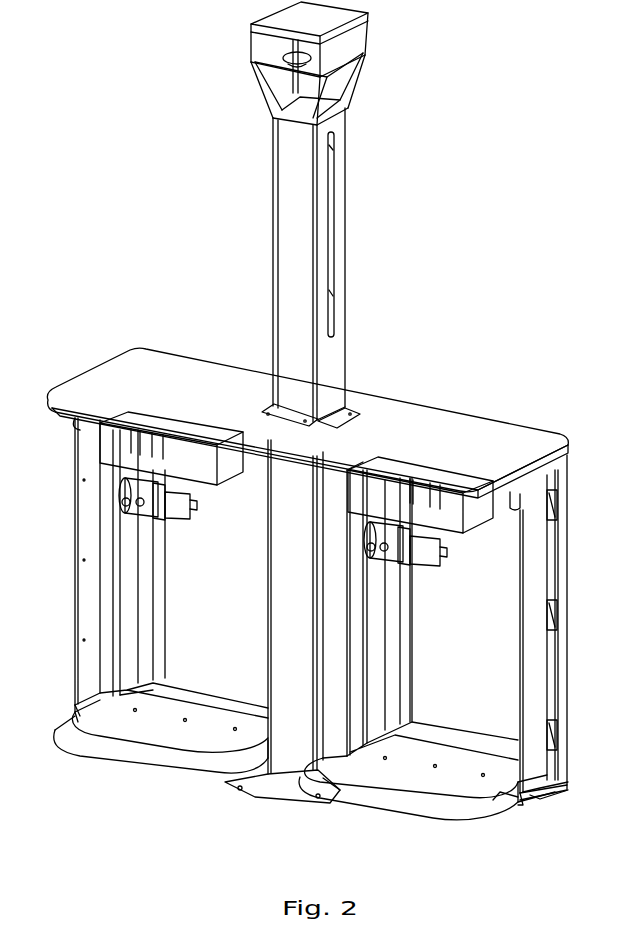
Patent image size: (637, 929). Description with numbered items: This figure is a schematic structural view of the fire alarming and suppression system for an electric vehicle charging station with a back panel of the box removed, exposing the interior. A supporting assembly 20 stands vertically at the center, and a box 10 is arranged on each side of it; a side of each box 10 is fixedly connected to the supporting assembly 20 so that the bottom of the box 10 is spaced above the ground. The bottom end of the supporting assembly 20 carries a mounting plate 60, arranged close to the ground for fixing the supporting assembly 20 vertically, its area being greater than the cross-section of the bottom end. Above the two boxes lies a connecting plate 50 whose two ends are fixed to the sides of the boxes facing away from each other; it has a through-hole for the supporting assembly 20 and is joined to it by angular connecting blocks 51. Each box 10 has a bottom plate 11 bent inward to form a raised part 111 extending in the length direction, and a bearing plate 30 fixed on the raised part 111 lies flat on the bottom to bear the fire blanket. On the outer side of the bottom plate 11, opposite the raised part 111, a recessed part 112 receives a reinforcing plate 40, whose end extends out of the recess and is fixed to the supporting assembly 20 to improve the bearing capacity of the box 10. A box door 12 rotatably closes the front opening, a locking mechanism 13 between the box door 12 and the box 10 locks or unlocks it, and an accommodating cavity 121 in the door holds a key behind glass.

The box 10 is at (60, 518).
The bottom plate 11 is at (153, 757).
The box door 12 is at (566, 652).
The locking mechanism 13 is at (130, 486).
The supporting assembly 20 is at (268, 775).
The bearing plate 30 is at (105, 738).
The reinforcing plate 40 is at (537, 794).
The connecting plate 50 is at (420, 411).
The angular connecting block 51 is at (272, 410).
The mounting plate 60 is at (294, 798).
The raised part 111 is at (77, 714).
The recessed part 112 is at (522, 806).
The accommodating cavity 121 is at (167, 520).